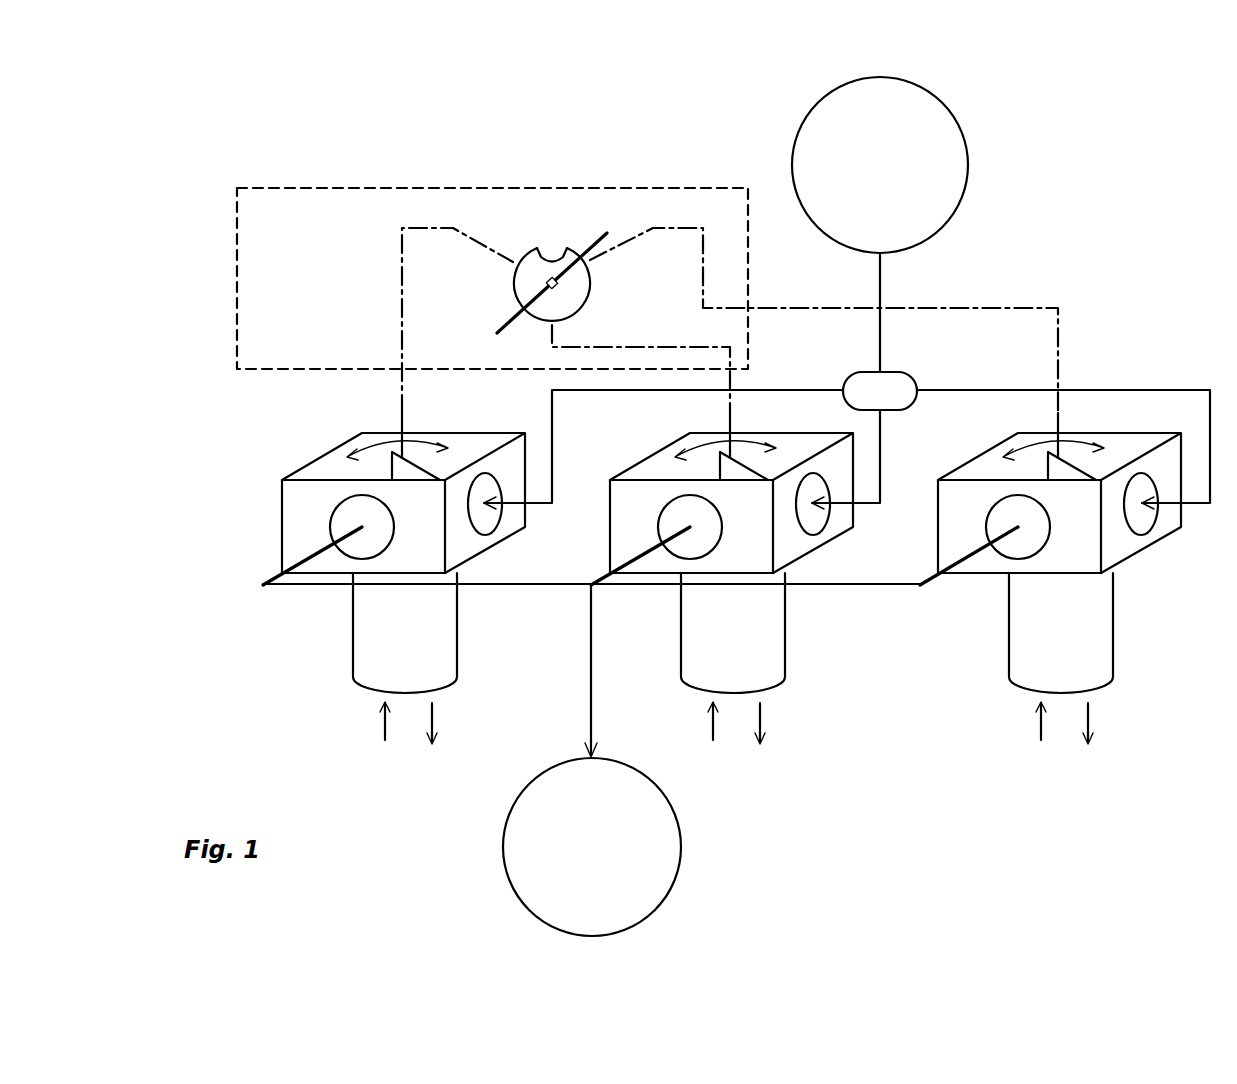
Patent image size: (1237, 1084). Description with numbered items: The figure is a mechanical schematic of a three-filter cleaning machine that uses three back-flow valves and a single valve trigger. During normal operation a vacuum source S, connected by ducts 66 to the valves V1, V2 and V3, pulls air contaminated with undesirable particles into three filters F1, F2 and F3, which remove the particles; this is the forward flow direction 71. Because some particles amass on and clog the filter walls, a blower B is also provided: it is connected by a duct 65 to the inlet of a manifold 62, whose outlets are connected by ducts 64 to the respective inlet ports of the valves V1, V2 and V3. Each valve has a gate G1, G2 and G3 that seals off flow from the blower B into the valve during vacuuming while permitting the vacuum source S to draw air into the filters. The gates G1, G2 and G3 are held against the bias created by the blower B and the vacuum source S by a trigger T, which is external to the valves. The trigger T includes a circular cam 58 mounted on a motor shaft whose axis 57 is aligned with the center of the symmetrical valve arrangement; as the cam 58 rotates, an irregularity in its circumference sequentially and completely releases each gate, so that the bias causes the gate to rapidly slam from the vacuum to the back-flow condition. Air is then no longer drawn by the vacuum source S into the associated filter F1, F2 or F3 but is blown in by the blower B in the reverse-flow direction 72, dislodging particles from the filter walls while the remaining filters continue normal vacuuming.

The trigger T is at (597, 188).
The axis of the motor shaft 57 is at (600, 237).
The circular cam 58 is at (513, 282).
The blower B is at (880, 165).
The duct 65 is at (882, 288).
The manifold 62 is at (905, 370).
The ducts 64 is at (807, 388).
The ducts 66 is at (565, 584).
The vacuum source S is at (592, 760).
The valve V1 is at (282, 552).
The valve V2 is at (610, 552).
The valve V3 is at (938, 552).
The gate G1 is at (383, 448).
The gate G2 is at (700, 445).
The gate G3 is at (1033, 443).
The filter F1 is at (357, 657).
The filter F2 is at (690, 655).
The filter F3 is at (1030, 657).
The forward flow direction 71 is at (385, 727).
The reverse-flow direction 72 is at (432, 727).